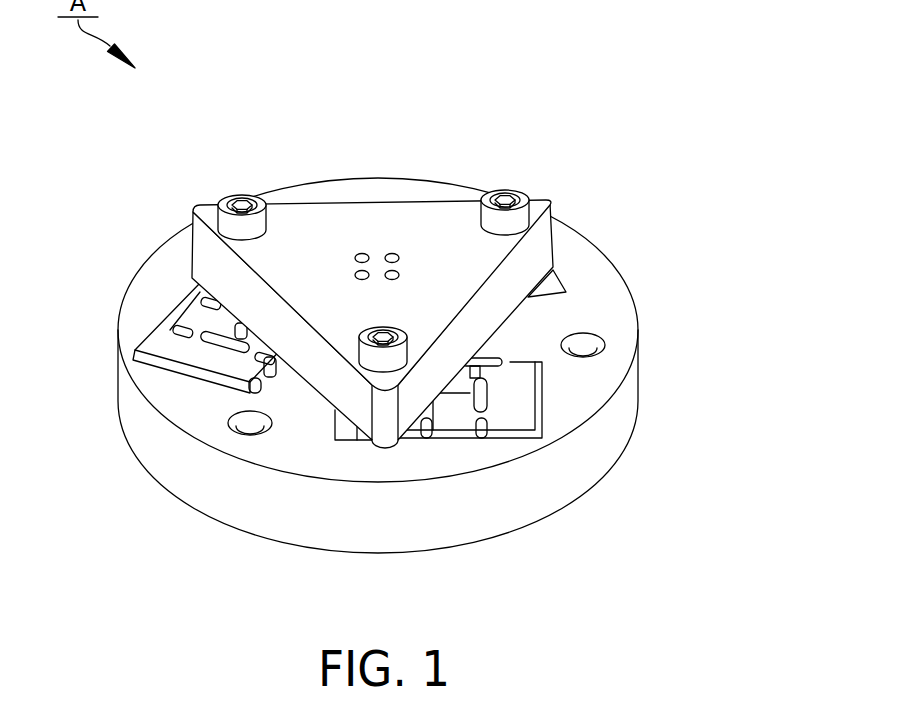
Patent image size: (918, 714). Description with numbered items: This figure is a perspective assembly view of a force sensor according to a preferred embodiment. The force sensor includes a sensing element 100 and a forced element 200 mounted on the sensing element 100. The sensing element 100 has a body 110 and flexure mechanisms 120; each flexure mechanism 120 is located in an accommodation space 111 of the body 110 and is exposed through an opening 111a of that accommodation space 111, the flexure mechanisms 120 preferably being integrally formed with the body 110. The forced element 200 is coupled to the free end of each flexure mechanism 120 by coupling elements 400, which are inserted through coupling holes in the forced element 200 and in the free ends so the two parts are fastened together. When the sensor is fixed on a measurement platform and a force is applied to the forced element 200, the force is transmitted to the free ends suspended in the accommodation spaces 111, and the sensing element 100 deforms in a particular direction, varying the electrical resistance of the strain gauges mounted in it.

The sensing element 100 is at (412, 395).
The body 110 is at (270, 515).
The accommodation space 111 is at (557, 292).
The opening 111a is at (200, 377).
The flexure mechanism 120 is at (138, 298).
The forced element 200 is at (378, 222).
The coupling element 400 is at (232, 203).